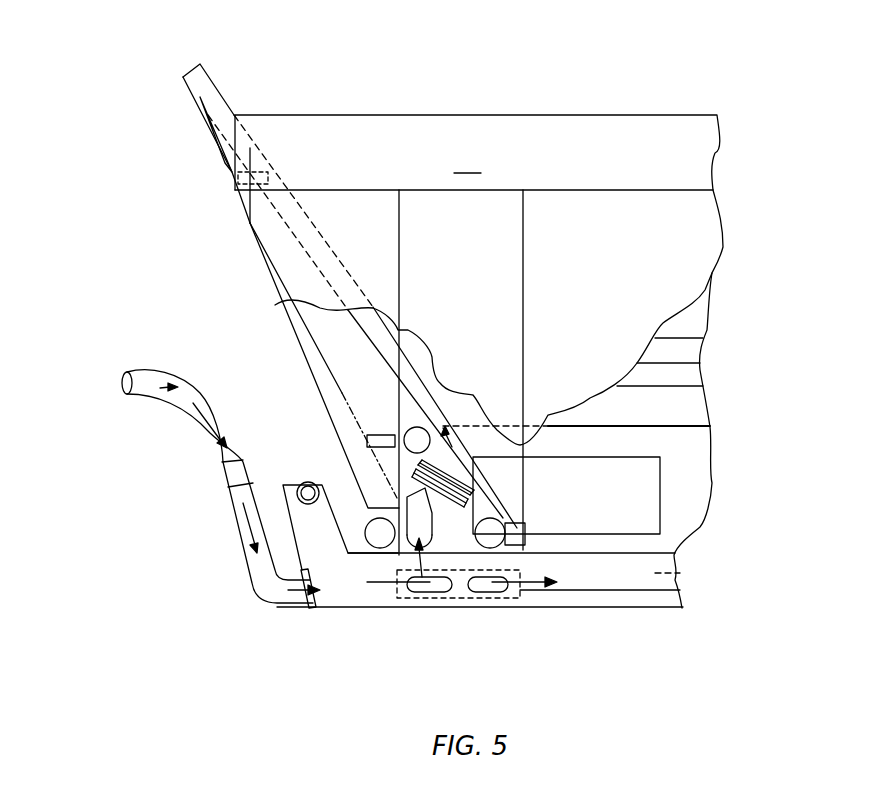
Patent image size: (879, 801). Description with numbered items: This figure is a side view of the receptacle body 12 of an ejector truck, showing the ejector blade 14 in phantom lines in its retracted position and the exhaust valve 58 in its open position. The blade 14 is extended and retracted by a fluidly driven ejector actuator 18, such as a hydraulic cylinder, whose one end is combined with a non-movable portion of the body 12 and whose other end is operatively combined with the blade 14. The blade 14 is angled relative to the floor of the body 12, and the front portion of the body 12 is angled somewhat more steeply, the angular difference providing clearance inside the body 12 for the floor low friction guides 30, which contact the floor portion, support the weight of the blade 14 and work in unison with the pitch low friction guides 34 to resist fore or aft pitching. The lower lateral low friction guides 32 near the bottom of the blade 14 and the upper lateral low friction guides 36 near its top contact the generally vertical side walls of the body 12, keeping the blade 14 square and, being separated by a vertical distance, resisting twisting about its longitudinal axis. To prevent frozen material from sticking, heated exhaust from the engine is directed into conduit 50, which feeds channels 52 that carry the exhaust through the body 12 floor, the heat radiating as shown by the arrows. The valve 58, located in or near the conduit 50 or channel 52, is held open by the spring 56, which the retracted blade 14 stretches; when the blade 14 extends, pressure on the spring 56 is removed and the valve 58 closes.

The receptacle body 12 is at (233, 174).
The ejector blade 14 is at (210, 90).
The ejector actuator 18 is at (627, 508).
The floor low friction guides 30 is at (497, 538).
The lower lateral low friction guides 32 is at (380, 440).
The pitch low friction guides 34 is at (400, 437).
The upper lateral low friction guides 36 is at (233, 172).
The conduit 50 is at (148, 390).
The channels 52 is at (655, 572).
The spring 56 is at (437, 492).
The valve 58 is at (437, 508).